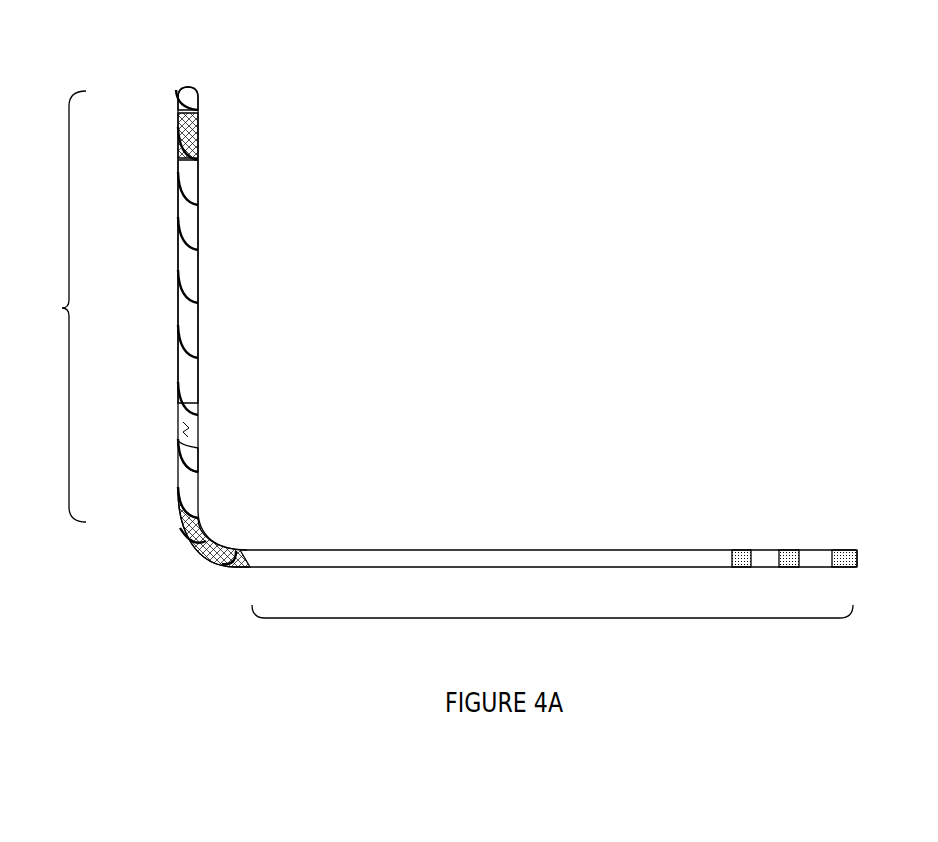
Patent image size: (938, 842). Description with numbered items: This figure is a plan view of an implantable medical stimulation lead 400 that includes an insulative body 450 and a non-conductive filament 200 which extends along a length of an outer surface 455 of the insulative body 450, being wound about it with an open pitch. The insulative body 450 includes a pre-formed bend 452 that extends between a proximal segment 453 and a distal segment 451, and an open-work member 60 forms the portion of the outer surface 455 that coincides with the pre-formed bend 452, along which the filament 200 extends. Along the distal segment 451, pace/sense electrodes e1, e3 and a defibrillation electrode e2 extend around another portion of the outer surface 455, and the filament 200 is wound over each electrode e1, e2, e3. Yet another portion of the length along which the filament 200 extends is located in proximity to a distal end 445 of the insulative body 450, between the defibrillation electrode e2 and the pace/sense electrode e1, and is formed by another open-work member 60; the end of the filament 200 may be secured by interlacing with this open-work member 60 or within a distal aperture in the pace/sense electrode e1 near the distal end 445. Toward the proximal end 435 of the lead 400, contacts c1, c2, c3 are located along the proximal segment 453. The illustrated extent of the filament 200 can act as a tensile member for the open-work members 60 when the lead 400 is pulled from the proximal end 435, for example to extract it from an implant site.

The implantable medical stimulation lead 400 is at (504, 271).
The distal end 445 is at (197, 83).
The pace/sense electrode e1 is at (190, 97).
The defibrillation electrode e2 is at (197, 260).
The pace/sense electrode e3 is at (193, 460).
The outer surface 455 is at (197, 140).
The open-work member 60 is at (180, 152).
The non-conductive filament 200 is at (196, 188).
The distal segment 451 is at (62, 308).
The pre-formed bend 452 is at (188, 563).
The insulative body 450 is at (338, 562).
The proximal segment 453 is at (552, 628).
The proximal end 435 is at (785, 448).
The contact c1 is at (842, 554).
The contact c2 is at (738, 554).
The contact c3 is at (788, 554).